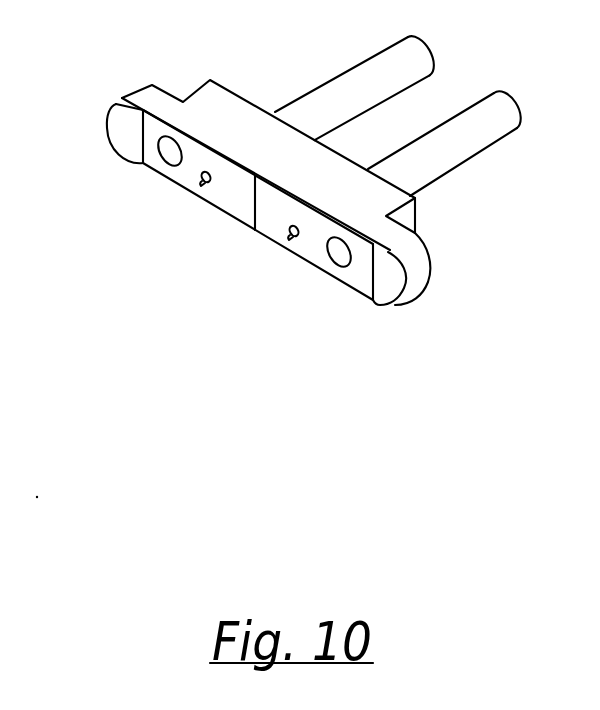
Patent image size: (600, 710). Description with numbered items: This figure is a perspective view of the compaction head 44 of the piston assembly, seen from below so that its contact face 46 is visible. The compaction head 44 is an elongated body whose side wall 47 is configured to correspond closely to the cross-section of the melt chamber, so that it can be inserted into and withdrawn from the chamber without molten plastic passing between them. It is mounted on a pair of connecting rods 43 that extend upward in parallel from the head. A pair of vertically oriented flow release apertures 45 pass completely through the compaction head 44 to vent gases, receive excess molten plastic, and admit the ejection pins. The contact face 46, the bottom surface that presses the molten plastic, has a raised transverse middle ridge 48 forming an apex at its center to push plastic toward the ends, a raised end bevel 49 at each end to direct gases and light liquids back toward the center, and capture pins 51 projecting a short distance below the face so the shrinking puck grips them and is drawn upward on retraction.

The connecting rods 43 is at (372, 83).
The compaction head 44 is at (450, 283).
The flow release apertures 45 is at (165, 153).
The contact face 46 is at (283, 208).
The side wall 47 is at (389, 252).
The middle ridge 48 is at (252, 210).
The end bevel 49 is at (107, 123).
The capture pins 51 is at (292, 234).